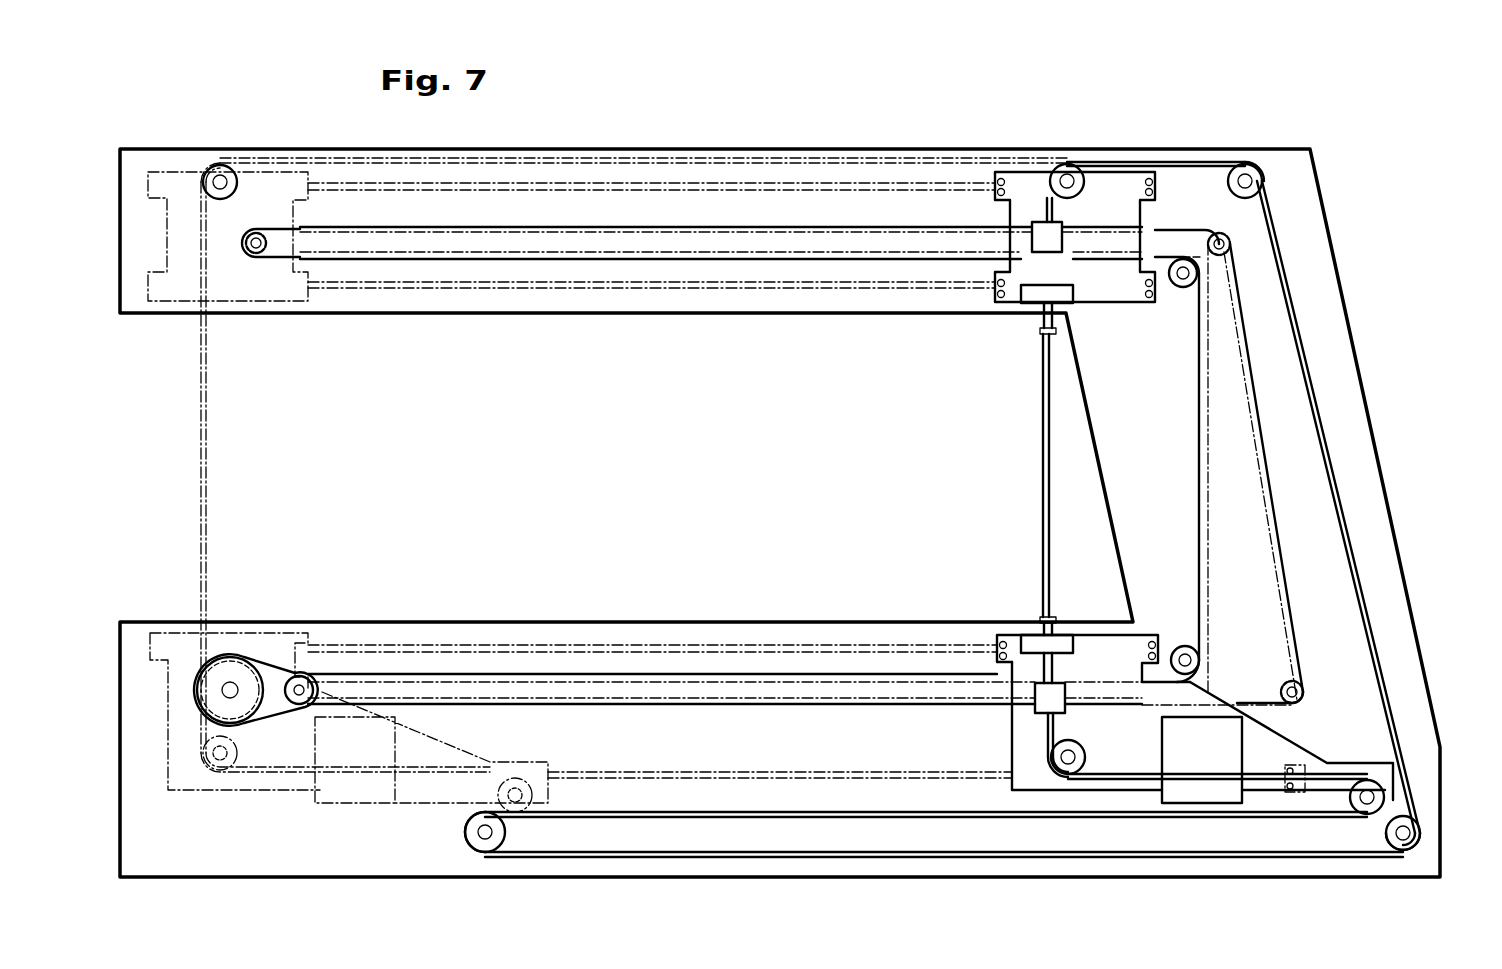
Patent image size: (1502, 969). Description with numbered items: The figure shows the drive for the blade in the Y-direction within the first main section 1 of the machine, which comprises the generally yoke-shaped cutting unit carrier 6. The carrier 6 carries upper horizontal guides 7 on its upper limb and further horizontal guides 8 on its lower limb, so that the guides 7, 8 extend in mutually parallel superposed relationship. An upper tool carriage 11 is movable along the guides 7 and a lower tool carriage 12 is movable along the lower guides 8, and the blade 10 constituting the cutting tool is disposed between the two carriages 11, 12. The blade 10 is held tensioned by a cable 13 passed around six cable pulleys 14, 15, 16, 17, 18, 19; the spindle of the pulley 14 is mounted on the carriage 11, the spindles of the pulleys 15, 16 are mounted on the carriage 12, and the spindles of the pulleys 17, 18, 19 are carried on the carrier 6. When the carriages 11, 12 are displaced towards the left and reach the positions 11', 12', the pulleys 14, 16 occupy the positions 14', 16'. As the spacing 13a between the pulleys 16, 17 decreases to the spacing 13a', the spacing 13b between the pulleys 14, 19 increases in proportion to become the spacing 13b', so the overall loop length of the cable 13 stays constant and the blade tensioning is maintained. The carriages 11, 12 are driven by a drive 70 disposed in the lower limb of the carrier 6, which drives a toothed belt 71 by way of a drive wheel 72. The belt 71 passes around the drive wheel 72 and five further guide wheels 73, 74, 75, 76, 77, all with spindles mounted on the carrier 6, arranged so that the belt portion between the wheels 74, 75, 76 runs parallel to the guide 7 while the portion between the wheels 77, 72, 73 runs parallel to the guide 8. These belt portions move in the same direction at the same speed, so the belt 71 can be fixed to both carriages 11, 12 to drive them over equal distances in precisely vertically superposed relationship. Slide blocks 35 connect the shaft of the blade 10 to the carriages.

The first main section 1 is at (1346, 214).
The cutting unit carrier 6 is at (1355, 400).
The horizontal guides 7 is at (583, 190).
The horizontal guides 8 is at (668, 648).
The blade 10 is at (1043, 470).
The upper tool carriage 11 is at (1075, 192).
The position of upper tool carriage 11' is at (228, 191).
The lower tool carriage 12 is at (1183, 719).
The position of lower tool carriage 12' is at (228, 675).
The cable 13 is at (1340, 470).
The spacing between pulleys 13a is at (934, 827).
The decreased spacing 13a' is at (606, 838).
The spacing between pulleys 13b is at (1146, 152).
The increased spacing 13b' is at (634, 417).
The cable pulley 14 is at (1063, 140).
The position of cable pulley 14' is at (233, 140).
The cable pulley 15 is at (1068, 765).
The cable pulley 16 is at (1360, 860).
The position of cable pulley 16' is at (434, 816).
The cable pulley 17 is at (483, 842).
The cable pulley 18 is at (1403, 845).
The cable pulley 19 is at (1245, 165).
The slide block 35 is at (1040, 300).
The drive 70 is at (255, 660).
The toothed belt 71 is at (445, 672).
The drive wheel 72 is at (292, 672).
The guide wheel 73 is at (1290, 680).
The guide wheel 74 is at (1222, 258).
The guide wheel 75 is at (256, 253).
The guide wheel 76 is at (1183, 290).
The guide wheel 77 is at (1183, 645).